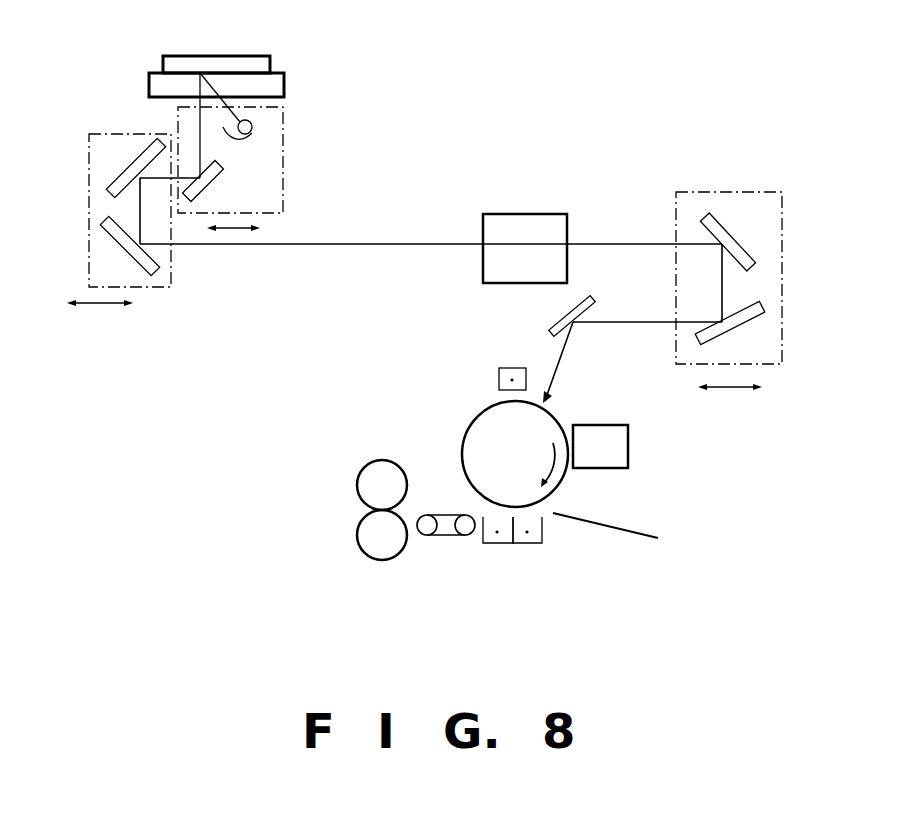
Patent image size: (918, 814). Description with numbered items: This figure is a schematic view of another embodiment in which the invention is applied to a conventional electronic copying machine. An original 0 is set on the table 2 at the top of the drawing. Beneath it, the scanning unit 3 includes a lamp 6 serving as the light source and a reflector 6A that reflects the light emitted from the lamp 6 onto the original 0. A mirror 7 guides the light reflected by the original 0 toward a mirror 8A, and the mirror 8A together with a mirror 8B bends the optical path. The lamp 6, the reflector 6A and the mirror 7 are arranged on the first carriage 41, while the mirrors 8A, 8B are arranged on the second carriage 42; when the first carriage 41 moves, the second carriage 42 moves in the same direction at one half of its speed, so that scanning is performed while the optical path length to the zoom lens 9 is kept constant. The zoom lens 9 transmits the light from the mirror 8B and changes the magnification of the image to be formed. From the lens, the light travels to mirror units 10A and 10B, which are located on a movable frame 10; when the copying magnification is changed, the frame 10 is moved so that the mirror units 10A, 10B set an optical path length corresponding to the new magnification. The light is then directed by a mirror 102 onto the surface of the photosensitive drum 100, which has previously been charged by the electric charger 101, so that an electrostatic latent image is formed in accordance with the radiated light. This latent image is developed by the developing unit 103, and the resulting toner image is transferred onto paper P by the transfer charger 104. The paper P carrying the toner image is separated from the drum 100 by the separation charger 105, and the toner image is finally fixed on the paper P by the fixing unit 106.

The original 0 is at (238, 67).
The table 2 is at (284, 74).
The reflector 6A is at (253, 122).
The lamp 6 is at (252, 134).
The mirror 7 is at (220, 183).
The first carriage 41 is at (283, 135).
The mirror 8A is at (123, 172).
The mirror 8B is at (142, 258).
The second carriage 42 is at (173, 253).
The scanning unit 3 is at (430, 148).
The zoom lens 9 is at (523, 230).
The movable frame 10 is at (782, 210).
The mirror unit 10A is at (720, 213).
The mirror unit 10B is at (762, 310).
The mirror 102 is at (555, 323).
The electric charger 101 is at (498, 385).
The photosensitive drum 100 is at (473, 447).
The developing unit 103 is at (628, 434).
The transfer charger 104 is at (533, 547).
The separation charger 105 is at (493, 547).
The fixing unit 106 is at (368, 462).
The paper P is at (658, 538).